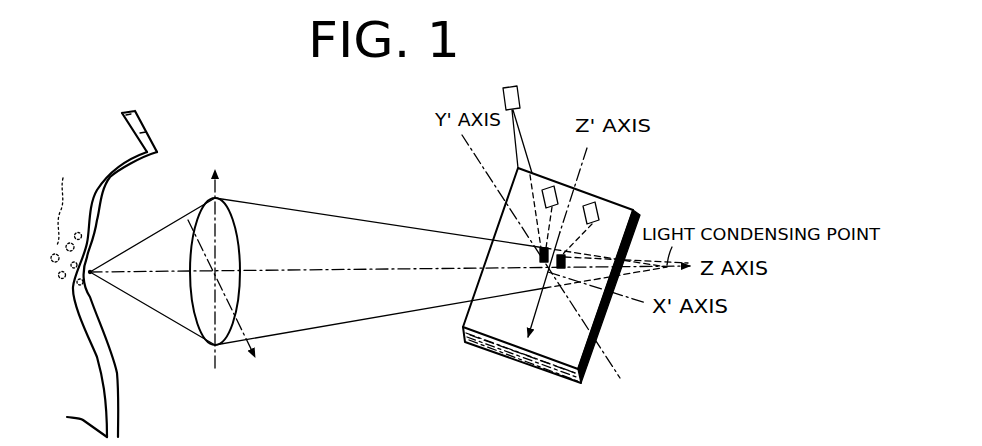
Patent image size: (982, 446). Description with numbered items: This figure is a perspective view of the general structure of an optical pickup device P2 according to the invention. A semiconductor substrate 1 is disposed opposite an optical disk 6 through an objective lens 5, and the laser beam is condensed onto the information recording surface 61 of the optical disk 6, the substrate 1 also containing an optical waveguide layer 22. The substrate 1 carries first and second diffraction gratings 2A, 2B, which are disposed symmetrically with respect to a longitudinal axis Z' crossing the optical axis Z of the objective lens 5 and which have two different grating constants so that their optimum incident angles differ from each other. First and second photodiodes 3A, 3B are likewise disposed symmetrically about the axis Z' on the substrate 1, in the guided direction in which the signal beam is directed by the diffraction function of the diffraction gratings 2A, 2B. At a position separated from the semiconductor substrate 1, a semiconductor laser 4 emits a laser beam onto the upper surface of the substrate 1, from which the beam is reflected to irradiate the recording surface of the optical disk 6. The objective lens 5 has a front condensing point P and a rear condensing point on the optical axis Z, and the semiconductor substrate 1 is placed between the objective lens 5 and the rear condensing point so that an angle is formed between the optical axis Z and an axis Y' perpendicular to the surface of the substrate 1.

The semiconductor substrate 1 is at (640, 213).
The first diffraction grating 2A is at (540, 262).
The second diffraction grating 2B is at (555, 287).
The first photodiode 3A is at (543, 187).
The second photodiode 3B is at (593, 200).
The semiconductor laser 4 is at (520, 94).
The objective lens 5 is at (227, 203).
The optical disk 6 is at (147, 130).
The information recording surface 61 is at (67, 220).
The optical waveguide layer 22 is at (512, 358).
The front condensing point P is at (93, 280).
The optical pickup device P2 is at (383, 422).